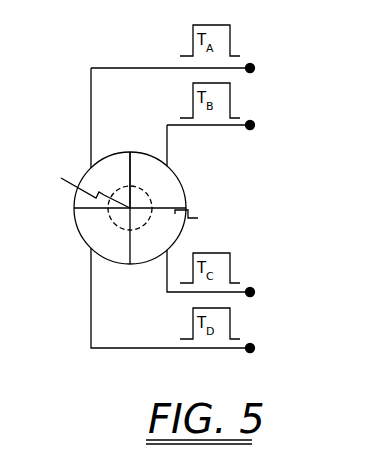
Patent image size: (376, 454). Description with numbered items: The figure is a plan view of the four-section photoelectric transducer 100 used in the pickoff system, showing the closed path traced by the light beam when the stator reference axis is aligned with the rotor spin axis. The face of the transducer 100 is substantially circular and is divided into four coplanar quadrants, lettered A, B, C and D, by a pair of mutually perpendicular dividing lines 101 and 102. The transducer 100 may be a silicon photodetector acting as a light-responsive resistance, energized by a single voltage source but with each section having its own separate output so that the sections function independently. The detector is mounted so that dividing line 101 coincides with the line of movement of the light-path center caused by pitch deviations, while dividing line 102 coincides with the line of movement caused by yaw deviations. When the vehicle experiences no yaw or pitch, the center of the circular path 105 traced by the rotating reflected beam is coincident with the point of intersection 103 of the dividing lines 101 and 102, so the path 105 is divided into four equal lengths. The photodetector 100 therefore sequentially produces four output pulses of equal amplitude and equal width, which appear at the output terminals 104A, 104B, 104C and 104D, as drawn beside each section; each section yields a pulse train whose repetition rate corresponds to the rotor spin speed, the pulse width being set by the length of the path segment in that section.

The photoelectric transducer 100 is at (178, 172).
The dividing line 101 is at (136, 153).
The dividing line 102 is at (203, 218).
The point of intersection 103 is at (78, 186).
The output terminal 104A is at (254, 67).
The output terminal 104B is at (254, 125).
The output terminal 104C is at (254, 291).
The output terminal 104D is at (254, 347).
The path traced by the beam of light 105 is at (152, 202).